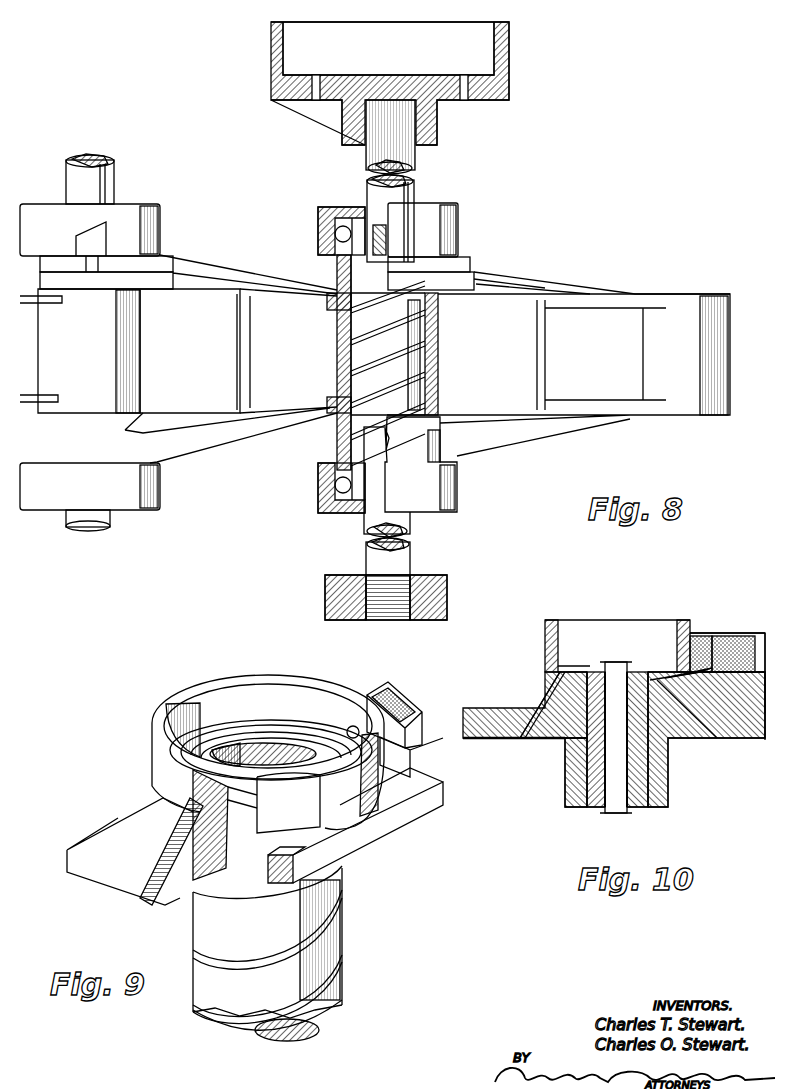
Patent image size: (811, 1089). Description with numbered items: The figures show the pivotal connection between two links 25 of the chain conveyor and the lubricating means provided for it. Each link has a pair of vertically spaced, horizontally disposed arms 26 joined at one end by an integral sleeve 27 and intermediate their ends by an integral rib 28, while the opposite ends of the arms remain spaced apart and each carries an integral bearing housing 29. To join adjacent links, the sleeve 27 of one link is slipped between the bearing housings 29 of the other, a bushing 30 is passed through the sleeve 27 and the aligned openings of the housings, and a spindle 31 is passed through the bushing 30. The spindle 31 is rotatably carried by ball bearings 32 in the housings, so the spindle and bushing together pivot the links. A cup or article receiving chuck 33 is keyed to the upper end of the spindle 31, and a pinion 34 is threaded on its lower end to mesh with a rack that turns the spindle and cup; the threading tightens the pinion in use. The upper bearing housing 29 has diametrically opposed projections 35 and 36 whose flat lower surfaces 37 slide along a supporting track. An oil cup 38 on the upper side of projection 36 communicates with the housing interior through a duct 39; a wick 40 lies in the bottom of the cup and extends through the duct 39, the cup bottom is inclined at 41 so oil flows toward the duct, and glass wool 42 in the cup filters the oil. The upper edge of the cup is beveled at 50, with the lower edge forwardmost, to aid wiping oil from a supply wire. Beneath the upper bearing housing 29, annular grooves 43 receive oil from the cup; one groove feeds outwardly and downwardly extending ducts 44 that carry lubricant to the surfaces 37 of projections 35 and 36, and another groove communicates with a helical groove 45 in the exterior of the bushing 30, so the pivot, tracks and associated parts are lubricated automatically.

In FIG. 8, the links 25 is at (205, 268).
In FIG. 8, the arms 26 is at (508, 286).
In FIG. 8, the sleeve 27 is at (100, 352).
In FIG. 10, the sleeve 27 is at (655, 790).
In FIG. 8, the rib 28 is at (538, 344).
In FIG. 8, the bearing housing 29 is at (323, 220).
In FIG. 9, the bearing housing 29 is at (240, 703).
In FIG. 10, the bearing housing 29 is at (617, 646).
In FIG. 8, the bushing 30 is at (375, 380).
In FIG. 9, the bushing 30 is at (342, 915).
In FIG. 10, the bushing 30 is at (595, 772).
In FIG. 8, the spindle 31 is at (392, 198).
In FIG. 10, the spindle 31 is at (613, 800).
In FIG. 8, the ball bearings 32 is at (318, 491).
In FIG. 8, the cup or article receiving chuck 33 is at (478, 62).
In FIG. 8, the pinion 34 is at (447, 582).
In FIG. 9, the projection 35 is at (130, 833).
In FIG. 10, the projection 35 is at (482, 710).
In FIG. 9, the projection 36 is at (405, 788).
In FIG. 10, the projection 36 is at (765, 740).
In FIG. 10, the surfaces 37 is at (506, 740).
In FIG. 8, the oil cup 38 is at (92, 238).
In FIG. 9, the oil cup 38 is at (372, 692).
In FIG. 10, the oil cup 38 is at (758, 640).
In FIG. 10, the duct 39 is at (678, 672).
In FIG. 10, the wick 40 is at (708, 636).
In FIG. 10, the inclined bottom 41 is at (718, 738).
In FIG. 9, the glass wool 42 is at (398, 690).
In FIG. 10, the glass wool 42 is at (728, 636).
In FIG. 9, the annular grooves 43 is at (298, 738).
In FIG. 10, the annular grooves 43 is at (565, 672).
In FIG. 9, the ducts 44 is at (215, 856).
In FIG. 10, the ducts 44 is at (542, 700).
In FIG. 8, the helical groove 45 is at (438, 320).
In FIG. 9, the helical groove 45 is at (232, 945).
In FIG. 10, the helical groove 45 is at (650, 762).
In FIG. 8, the beveled upper edge 50 is at (385, 230).
In FIG. 9, the beveled upper edge 50 is at (405, 700).